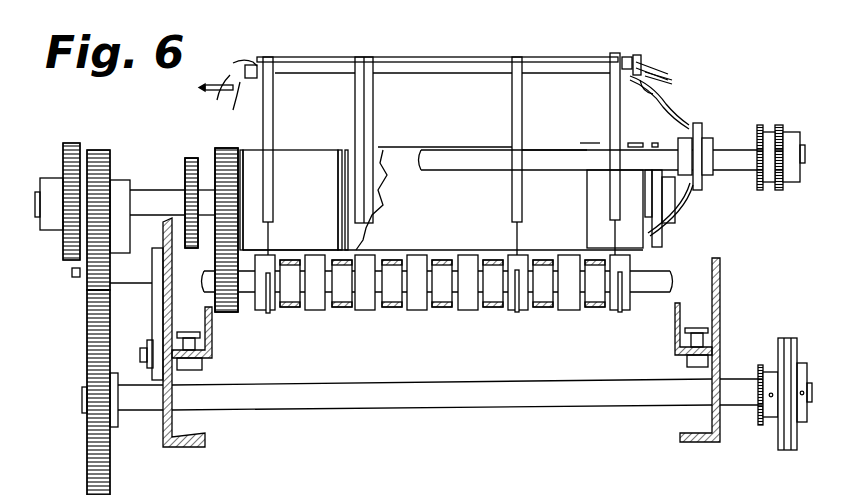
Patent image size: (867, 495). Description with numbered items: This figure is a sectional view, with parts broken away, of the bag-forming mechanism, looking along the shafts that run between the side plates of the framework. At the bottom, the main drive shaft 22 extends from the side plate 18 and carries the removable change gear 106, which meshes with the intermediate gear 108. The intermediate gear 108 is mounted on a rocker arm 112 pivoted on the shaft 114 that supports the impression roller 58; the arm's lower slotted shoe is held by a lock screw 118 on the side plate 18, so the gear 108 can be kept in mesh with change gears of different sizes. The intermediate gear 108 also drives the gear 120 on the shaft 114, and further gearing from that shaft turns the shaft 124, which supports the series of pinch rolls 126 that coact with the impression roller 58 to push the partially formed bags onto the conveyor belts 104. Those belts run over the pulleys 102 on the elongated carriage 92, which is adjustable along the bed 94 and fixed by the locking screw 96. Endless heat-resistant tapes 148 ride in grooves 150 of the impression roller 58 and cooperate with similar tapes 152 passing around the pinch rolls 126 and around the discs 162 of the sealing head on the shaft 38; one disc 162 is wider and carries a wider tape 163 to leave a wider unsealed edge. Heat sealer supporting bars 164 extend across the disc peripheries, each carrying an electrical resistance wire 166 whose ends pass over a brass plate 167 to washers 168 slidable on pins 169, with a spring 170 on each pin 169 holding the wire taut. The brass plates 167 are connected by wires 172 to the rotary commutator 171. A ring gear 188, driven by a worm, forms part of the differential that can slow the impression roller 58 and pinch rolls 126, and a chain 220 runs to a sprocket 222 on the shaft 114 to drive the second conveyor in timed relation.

The side plate 18 is at (172, 302).
The main drive shaft 22 is at (360, 400).
The shaft 38 is at (455, 158).
The impression roller 58 is at (304, 163).
The elongated carriage 92 is at (213, 324).
The bed 94 is at (190, 447).
The locking screw 96 is at (205, 343).
The pulleys 102 is at (595, 294).
The conveyor belt 104 is at (532, 304).
The change gear 106 is at (90, 362).
The intermediate gear 108 is at (88, 304).
The rocker arm 112 is at (122, 258).
The shaft 114 is at (153, 203).
The lock screw 118 is at (143, 353).
The gear 120 is at (96, 155).
The shaft 124 is at (652, 276).
The pinch rolls 126 is at (420, 311).
The tapes 148 is at (340, 215).
The grooves 150 is at (337, 178).
The tapes 152 is at (523, 196).
The discs 162 is at (274, 103).
The tape 163 is at (374, 96).
The heat sealer supporting bars 164 is at (458, 73).
The electrical resistance wire 166 is at (415, 58).
The brass plate 167 is at (255, 66).
The washers 168 is at (241, 66).
The pins 169 is at (199, 88).
The spring 170 is at (673, 96).
The rotary commutator 171 is at (703, 129).
The wires 172 is at (680, 118).
The ring gear 188 is at (68, 148).
The chain 220 is at (192, 160).
The sprocket 222 is at (183, 160).